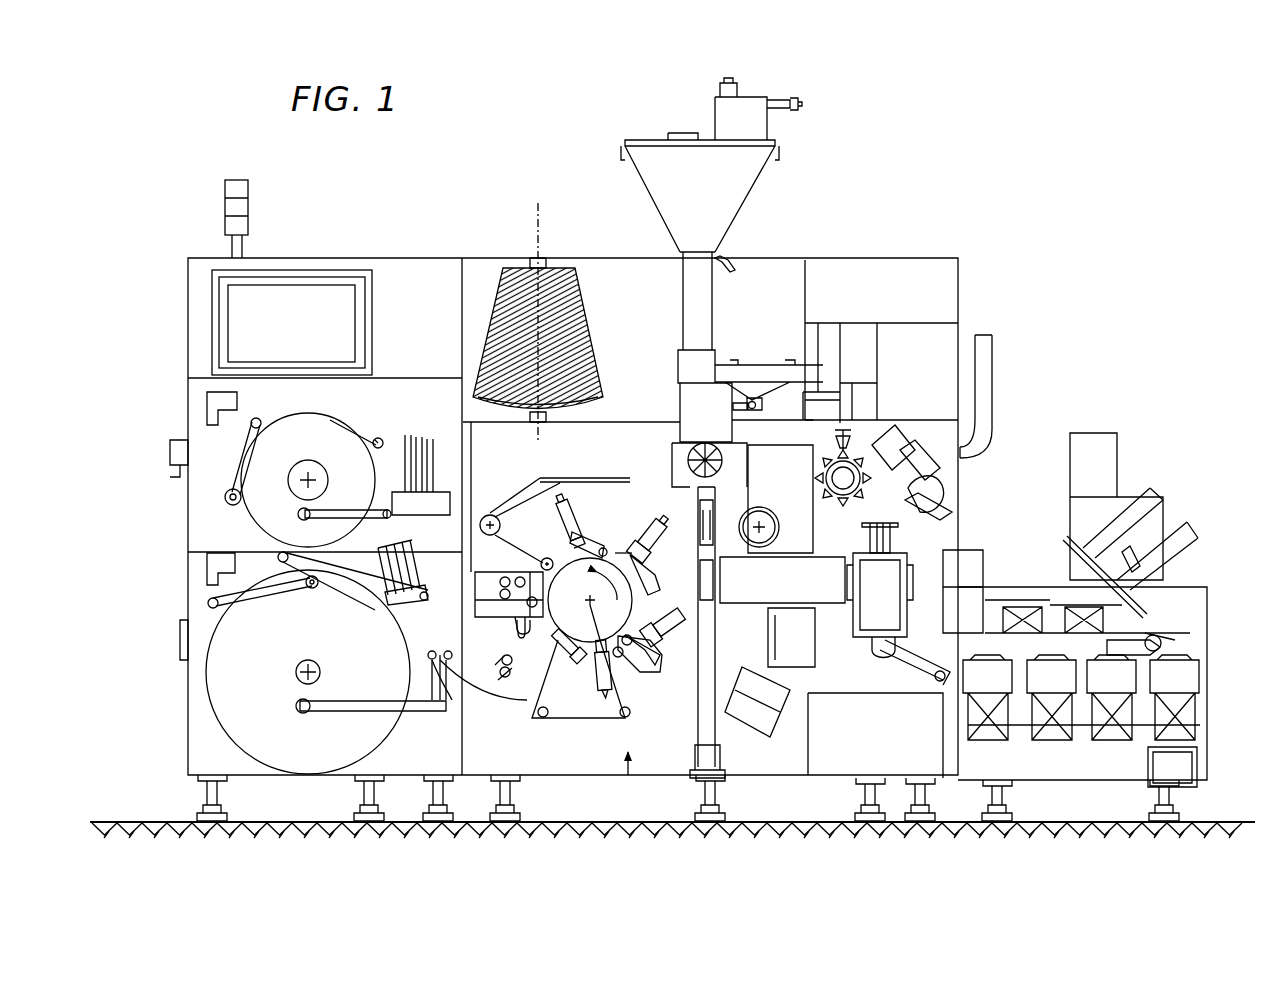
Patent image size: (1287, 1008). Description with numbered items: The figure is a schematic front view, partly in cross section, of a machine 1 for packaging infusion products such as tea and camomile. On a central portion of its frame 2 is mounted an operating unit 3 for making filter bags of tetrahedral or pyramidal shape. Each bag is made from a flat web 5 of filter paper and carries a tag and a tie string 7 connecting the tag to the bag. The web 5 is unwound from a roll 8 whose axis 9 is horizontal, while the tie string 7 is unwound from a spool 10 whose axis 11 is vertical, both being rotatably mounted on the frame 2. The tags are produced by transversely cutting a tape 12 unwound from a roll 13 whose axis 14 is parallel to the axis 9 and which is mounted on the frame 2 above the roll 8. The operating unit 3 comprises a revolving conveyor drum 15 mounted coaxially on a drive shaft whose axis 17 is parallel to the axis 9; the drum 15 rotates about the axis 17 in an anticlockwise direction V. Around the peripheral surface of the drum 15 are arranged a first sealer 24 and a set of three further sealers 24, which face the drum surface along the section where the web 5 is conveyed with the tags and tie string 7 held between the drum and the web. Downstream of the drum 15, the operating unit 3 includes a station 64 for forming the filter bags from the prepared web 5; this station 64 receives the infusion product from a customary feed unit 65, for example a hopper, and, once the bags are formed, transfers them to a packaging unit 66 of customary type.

The machine 1 is at (1094, 302).
The frame 2 is at (673, 748).
The operating unit 3 is at (628, 775).
The web 5 is at (575, 613).
The tie string 7 is at (462, 435).
The roll 8 is at (208, 633).
The axis 9 is at (297, 673).
The spool 10 is at (507, 320).
The axis 11 is at (537, 249).
The tape 12 is at (462, 540).
The roll 13 is at (247, 520).
The axis 14 is at (308, 480).
The revolving conveyor drum 15 is at (547, 633).
The axis 17 is at (594, 603).
The sealer 24 is at (568, 510).
The station for forming the filter bags 64 is at (893, 383).
The feed unit 65 is at (653, 162).
The packaging unit 66 is at (997, 477).
The direction of rotation V is at (623, 553).